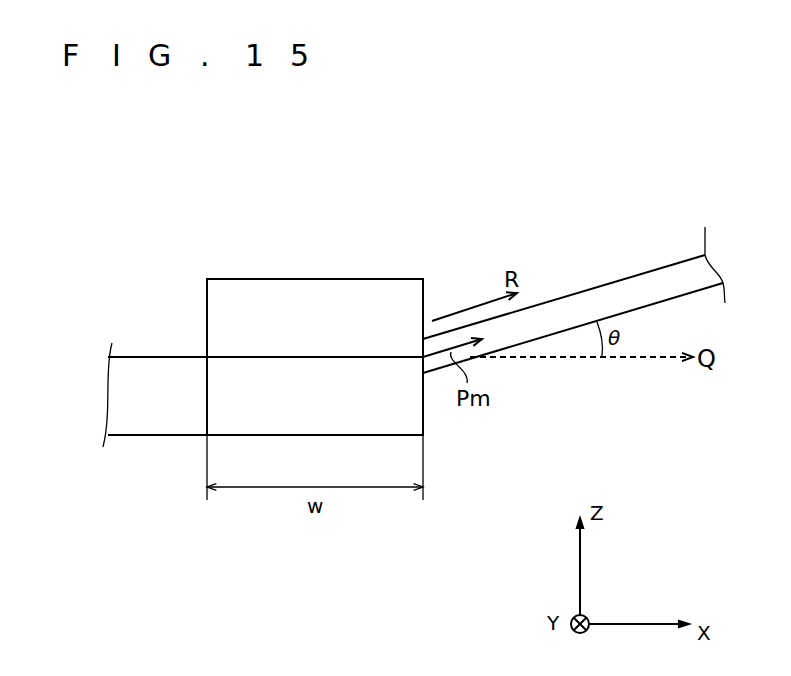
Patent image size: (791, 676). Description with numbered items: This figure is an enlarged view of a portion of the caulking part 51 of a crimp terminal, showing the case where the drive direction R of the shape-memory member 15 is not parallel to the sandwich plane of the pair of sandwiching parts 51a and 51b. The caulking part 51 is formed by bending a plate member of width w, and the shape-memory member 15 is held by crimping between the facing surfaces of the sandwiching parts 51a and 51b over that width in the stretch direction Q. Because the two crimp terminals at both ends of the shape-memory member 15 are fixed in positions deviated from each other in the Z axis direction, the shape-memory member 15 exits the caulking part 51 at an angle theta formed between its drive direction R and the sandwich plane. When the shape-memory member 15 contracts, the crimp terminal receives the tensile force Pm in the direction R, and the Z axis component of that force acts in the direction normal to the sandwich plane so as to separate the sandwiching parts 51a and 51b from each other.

The caulking part 51 is at (268, 292).
The sandwiching part 51a is at (377, 292).
The sandwiching part 51b is at (413, 410).
The shape-memory member 15 is at (604, 285).